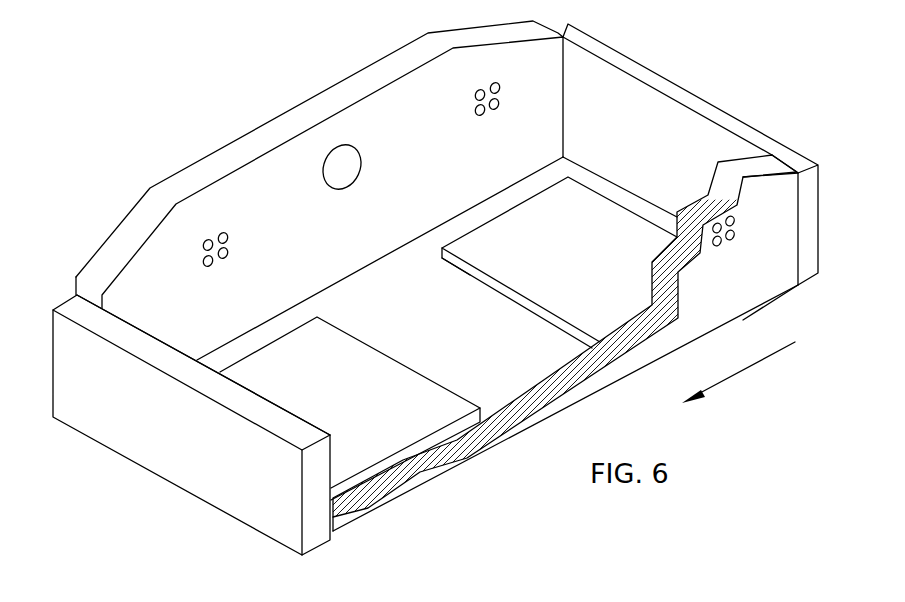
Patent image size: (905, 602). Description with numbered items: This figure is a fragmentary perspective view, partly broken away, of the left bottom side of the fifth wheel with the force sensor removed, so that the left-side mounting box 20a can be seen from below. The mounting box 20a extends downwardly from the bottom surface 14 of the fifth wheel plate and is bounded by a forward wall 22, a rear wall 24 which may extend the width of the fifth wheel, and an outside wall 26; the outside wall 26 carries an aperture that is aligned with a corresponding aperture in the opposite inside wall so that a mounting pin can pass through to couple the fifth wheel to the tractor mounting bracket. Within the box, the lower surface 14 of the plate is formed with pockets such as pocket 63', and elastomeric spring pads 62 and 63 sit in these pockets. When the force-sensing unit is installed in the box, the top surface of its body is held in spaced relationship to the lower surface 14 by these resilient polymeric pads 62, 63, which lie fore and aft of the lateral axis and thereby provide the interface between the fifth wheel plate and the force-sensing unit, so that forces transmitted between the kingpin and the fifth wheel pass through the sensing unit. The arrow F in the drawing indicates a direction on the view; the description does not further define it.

The left-side mounting box 20a is at (598, 86).
The outside wall 26 is at (340, 80).
The rear wall 24 is at (745, 135).
The forward wall 22 is at (170, 430).
The bottom surface 14 is at (506, 367).
The elastomeric spring pad 62 is at (362, 365).
The elastomeric spring pad 63 is at (597, 207).
The pocket 63' is at (439, 283).
The flow direction F is at (728, 378).